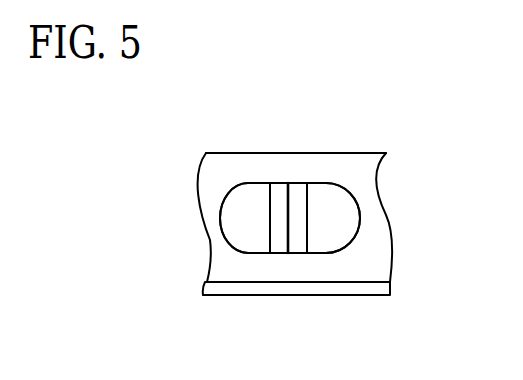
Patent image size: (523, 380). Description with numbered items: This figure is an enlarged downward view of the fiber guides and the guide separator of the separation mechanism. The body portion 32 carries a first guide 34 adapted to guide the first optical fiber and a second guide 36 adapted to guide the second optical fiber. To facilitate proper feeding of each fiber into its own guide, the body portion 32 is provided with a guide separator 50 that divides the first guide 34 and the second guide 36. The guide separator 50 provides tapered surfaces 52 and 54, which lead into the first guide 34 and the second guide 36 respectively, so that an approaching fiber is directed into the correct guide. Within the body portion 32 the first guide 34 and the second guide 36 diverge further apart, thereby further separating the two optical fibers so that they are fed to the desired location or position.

The body portion 32 is at (297, 162).
The first guide 34 is at (328, 195).
The second guide 36 is at (243, 193).
The guide separator 50 is at (283, 252).
The tapered surface 52 is at (300, 225).
The tapered surface 54 is at (280, 213).